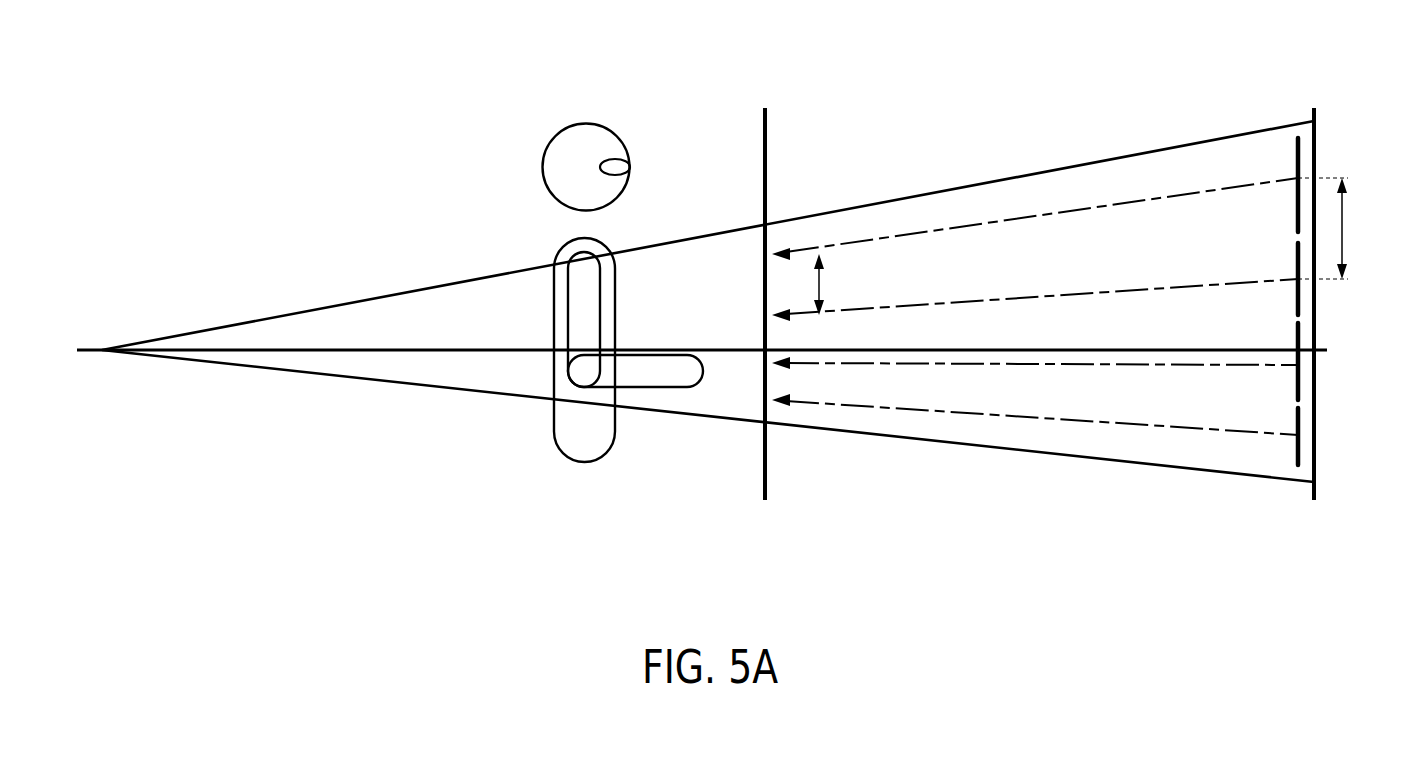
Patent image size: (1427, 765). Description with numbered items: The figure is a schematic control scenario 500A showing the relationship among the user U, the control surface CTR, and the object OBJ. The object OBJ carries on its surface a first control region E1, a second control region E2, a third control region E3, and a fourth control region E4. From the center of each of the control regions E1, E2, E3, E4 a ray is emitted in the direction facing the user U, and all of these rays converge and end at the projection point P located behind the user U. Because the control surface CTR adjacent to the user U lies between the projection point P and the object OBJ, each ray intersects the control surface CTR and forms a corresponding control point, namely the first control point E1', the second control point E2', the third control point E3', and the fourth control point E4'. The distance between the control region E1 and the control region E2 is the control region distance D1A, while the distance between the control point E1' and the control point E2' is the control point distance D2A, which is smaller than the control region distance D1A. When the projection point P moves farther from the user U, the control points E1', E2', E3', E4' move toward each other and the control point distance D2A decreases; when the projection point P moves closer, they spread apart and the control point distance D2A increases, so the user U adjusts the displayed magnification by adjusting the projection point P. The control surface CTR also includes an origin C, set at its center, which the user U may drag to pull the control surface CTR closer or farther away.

The projection point P is at (703, 301).
The origin C is at (765, 350).
The control surface CTR is at (764, 108).
The object OBJ is at (1312, 108).
The user U is at (587, 122).
The control region E1 is at (1279, 185).
The control region E2 is at (1279, 280).
The control region E3 is at (1279, 362).
The control region E4 is at (1279, 439).
The control point E1' is at (1010, 222).
The control point E2' is at (1010, 303).
The control point E3' is at (1010, 363).
The control point E4' is at (1010, 411).
The control region distance D1A is at (1344, 228).
The control point distance D2A is at (841, 284).
The scenario 500A is at (1253, 583).